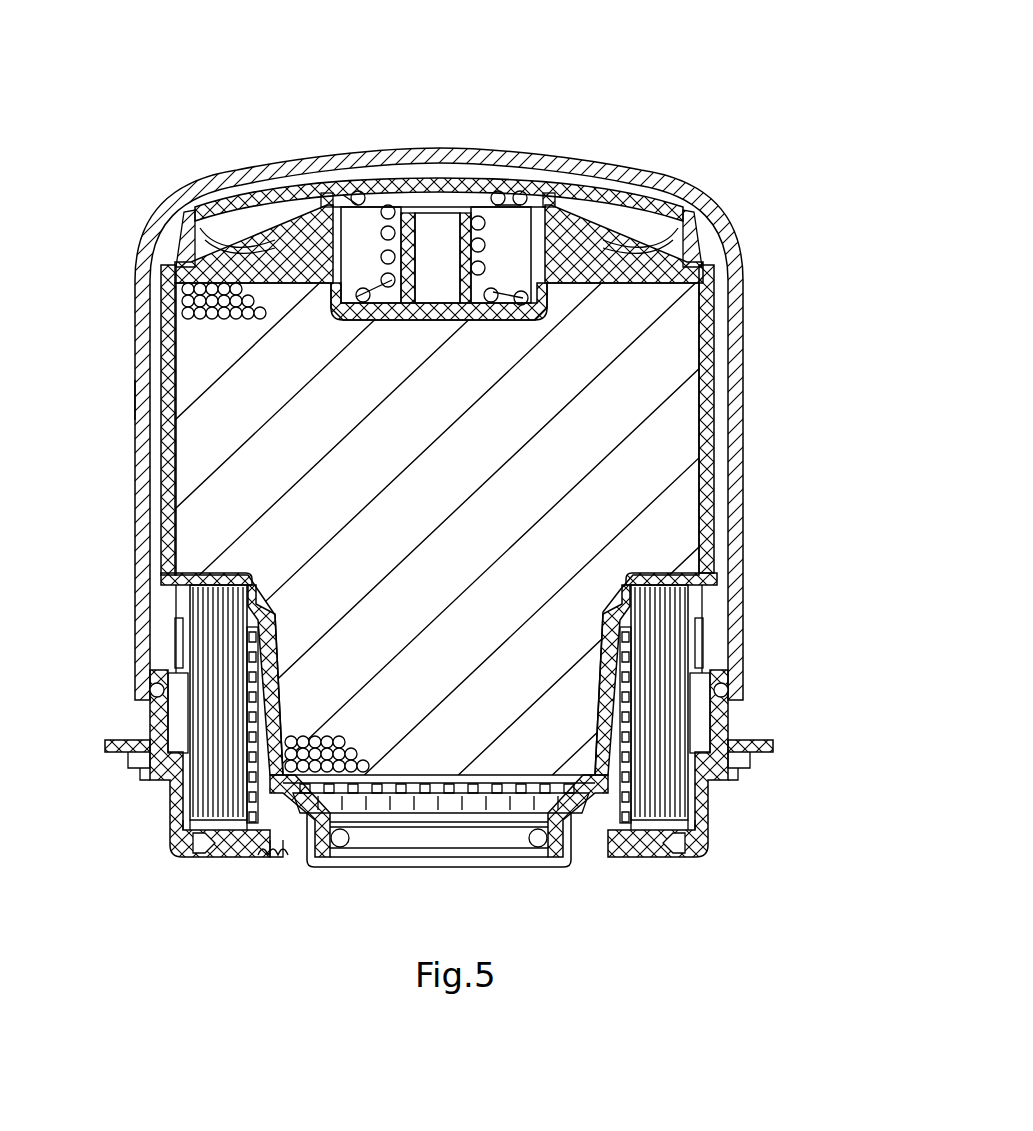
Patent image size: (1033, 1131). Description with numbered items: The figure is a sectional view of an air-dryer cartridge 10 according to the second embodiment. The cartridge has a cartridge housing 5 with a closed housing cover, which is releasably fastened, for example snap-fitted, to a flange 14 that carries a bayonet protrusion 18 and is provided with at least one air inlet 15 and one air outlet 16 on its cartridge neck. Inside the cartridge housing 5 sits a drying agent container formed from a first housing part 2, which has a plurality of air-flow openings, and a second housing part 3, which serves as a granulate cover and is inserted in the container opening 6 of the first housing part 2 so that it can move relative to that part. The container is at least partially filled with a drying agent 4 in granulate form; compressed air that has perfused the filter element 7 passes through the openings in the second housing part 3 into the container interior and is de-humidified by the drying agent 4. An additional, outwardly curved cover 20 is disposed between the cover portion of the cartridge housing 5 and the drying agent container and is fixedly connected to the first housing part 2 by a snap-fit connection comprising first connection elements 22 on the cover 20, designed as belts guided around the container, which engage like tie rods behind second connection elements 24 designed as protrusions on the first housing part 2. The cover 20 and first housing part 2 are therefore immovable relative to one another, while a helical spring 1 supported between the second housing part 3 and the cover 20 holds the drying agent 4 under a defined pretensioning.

The air-dryer cartridge 10 is at (625, 113).
The helical spring 1 is at (415, 192).
The first housing part 2 is at (712, 447).
The second housing part 3 is at (712, 236).
The drying agent 4 is at (163, 297).
The cartridge housing 5 is at (137, 397).
The container opening 6 is at (702, 330).
The filter element 7 is at (650, 658).
The flange 14 is at (170, 812).
The air inlet 15 is at (278, 860).
The air outlet 16 is at (420, 838).
The bayonet protrusion 18 is at (132, 758).
The cover 20 is at (250, 196).
The first connection elements 22 is at (177, 632).
The second connection elements 24 is at (176, 592).